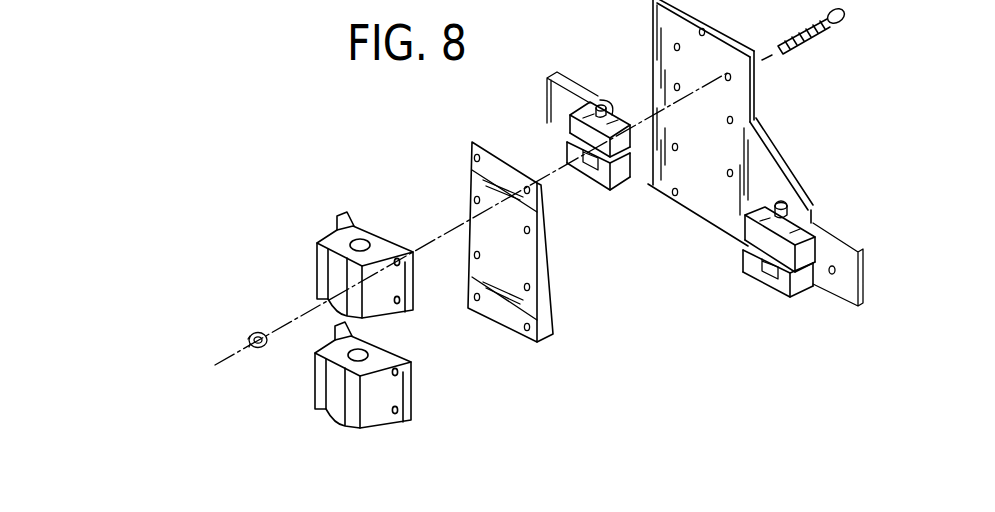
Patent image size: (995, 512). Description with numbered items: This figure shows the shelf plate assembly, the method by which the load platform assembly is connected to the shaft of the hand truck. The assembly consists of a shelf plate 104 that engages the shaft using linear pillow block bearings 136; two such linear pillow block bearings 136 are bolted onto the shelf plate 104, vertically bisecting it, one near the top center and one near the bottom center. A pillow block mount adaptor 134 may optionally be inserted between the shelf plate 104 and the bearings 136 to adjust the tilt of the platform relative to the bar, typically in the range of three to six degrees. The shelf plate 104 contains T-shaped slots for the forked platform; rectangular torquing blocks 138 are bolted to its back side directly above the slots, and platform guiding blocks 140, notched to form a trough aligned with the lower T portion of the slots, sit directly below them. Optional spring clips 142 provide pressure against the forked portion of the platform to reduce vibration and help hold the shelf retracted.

The shelf plate 104 is at (805, 160).
The pillow block mount adaptor 134 is at (560, 327).
The linear pillow block bearing 136 is at (320, 231).
The rectangular torquing block 138 is at (560, 120).
The platform guiding block 140 is at (594, 193).
The spring clip 142 is at (598, 98).